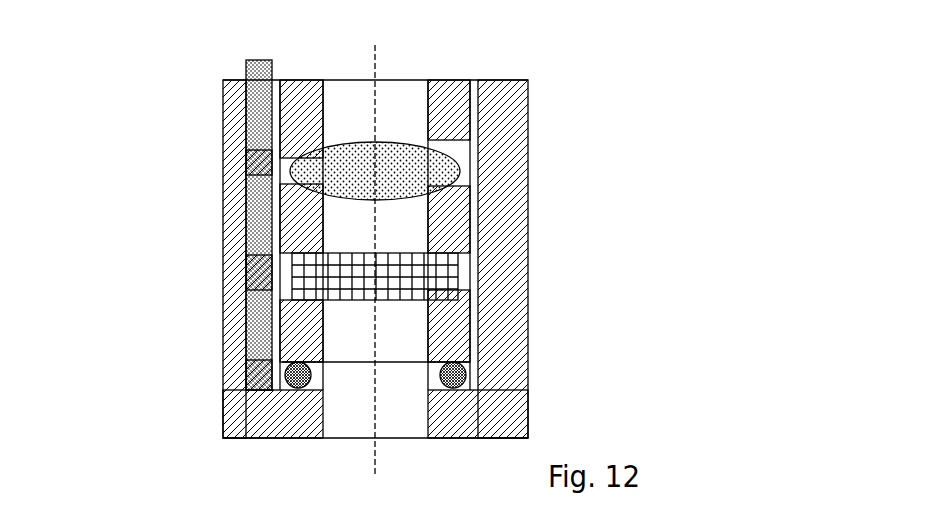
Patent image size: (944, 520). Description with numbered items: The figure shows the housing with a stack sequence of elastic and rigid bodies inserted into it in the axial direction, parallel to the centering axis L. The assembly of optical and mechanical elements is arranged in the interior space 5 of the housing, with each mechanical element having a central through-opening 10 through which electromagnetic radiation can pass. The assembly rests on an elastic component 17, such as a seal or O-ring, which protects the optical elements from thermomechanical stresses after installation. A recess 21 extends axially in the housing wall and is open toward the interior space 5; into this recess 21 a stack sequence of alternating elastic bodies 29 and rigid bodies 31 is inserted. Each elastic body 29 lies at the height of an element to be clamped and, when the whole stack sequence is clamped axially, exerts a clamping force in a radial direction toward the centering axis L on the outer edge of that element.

The centering axis L is at (378, 78).
The recess 21 is at (232, 298).
The interior space 5 is at (450, 272).
The through-opening 10 is at (416, 121).
The elastic component 17 is at (462, 372).
The elastic body 29 is at (258, 112).
The rigid body 31 is at (258, 168).